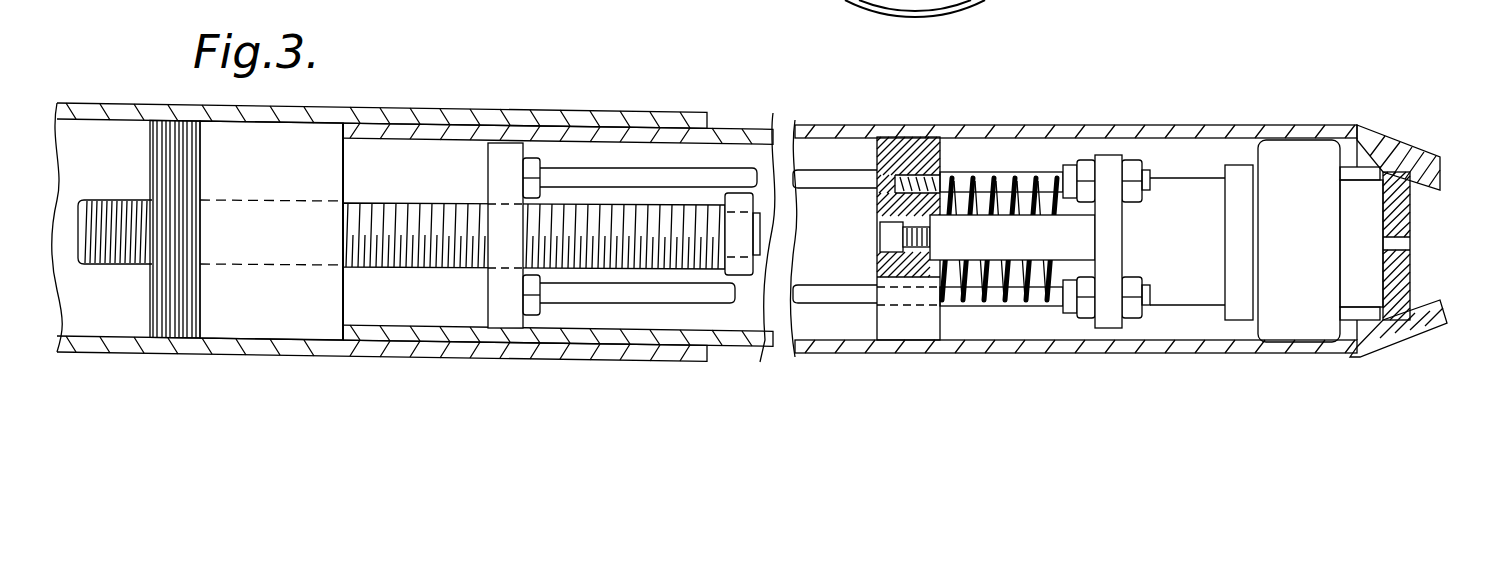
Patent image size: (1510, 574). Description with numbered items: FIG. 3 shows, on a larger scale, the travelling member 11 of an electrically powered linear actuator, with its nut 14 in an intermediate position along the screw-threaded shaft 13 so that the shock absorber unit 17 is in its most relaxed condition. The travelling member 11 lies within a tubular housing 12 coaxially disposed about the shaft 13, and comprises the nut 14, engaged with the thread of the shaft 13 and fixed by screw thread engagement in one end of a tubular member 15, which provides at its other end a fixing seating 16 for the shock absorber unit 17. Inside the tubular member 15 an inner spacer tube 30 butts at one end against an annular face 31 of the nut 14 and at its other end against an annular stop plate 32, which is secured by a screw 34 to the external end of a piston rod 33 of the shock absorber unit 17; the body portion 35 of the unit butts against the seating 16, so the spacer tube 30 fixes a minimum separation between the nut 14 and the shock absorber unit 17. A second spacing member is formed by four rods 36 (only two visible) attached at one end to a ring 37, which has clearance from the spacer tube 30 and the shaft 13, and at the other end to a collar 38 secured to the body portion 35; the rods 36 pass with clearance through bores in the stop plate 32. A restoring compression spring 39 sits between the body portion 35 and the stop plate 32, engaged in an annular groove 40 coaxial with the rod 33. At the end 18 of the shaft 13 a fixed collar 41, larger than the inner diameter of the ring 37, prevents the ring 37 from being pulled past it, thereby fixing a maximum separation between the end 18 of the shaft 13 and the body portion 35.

The travelling member 11 is at (1000, 352).
The tubular housing 12 is at (547, 111).
The screw-threaded shaft 13 is at (105, 200).
The nut 14 is at (281, 315).
The tubular member 15 is at (962, 126).
The fixing seating 16 is at (1390, 218).
The shock absorber unit 17 is at (1053, 155).
The end of the shaft 18 is at (765, 240).
The inner spacer tube 30 is at (416, 328).
The annular face 31 is at (345, 157).
The annular stop plate 32 is at (890, 140).
The piston rod 33 is at (943, 250).
The screw 34 is at (887, 240).
The body portion 35 is at (1193, 318).
The rods 36 is at (602, 168).
The ring 37 is at (497, 162).
The collar 38 is at (1115, 230).
The restoring compression spring 39 is at (993, 180).
The annular groove 40 is at (940, 163).
The fixed collar 41 is at (752, 275).